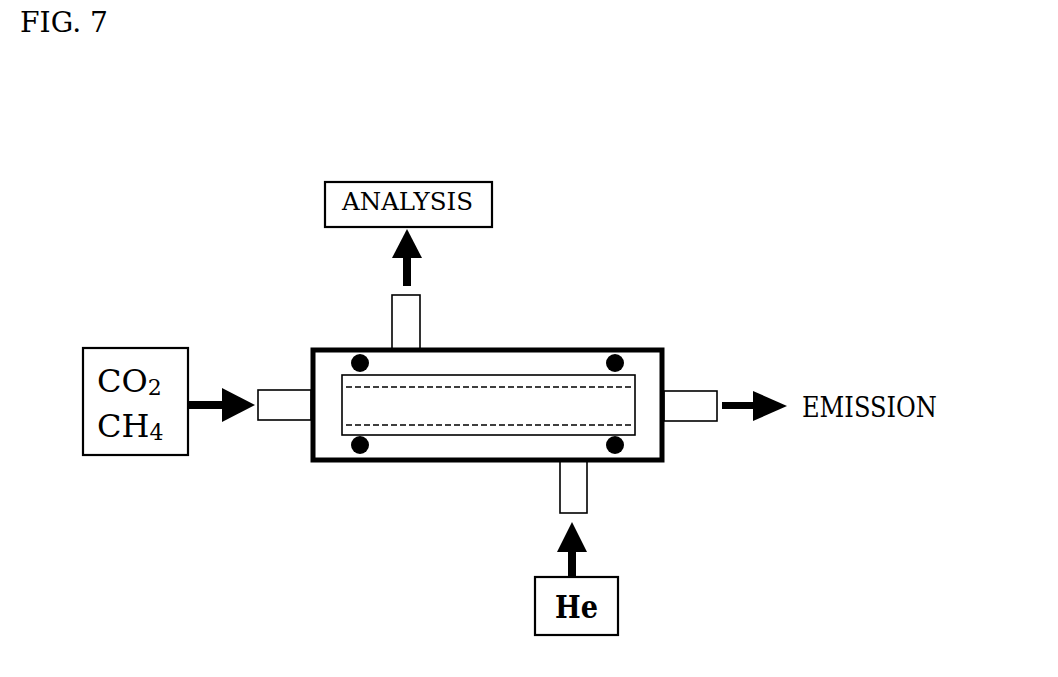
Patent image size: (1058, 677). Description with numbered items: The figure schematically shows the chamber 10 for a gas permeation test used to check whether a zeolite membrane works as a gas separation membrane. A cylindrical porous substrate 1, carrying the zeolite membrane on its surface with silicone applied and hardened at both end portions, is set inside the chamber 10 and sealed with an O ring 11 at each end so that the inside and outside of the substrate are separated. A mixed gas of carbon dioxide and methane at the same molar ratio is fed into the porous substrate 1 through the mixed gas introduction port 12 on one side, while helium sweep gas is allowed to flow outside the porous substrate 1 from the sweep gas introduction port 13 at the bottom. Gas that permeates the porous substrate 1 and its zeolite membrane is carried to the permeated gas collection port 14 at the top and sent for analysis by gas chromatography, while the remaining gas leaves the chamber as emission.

The porous substrate 1 is at (500, 375).
The chamber for a gas permeation test 10 is at (578, 348).
The O ring 11 is at (363, 455).
The mixed gas introduction port 12 is at (282, 390).
The sweep gas introduction port 13 is at (560, 490).
The permeated gas collection port 14 is at (392, 323).